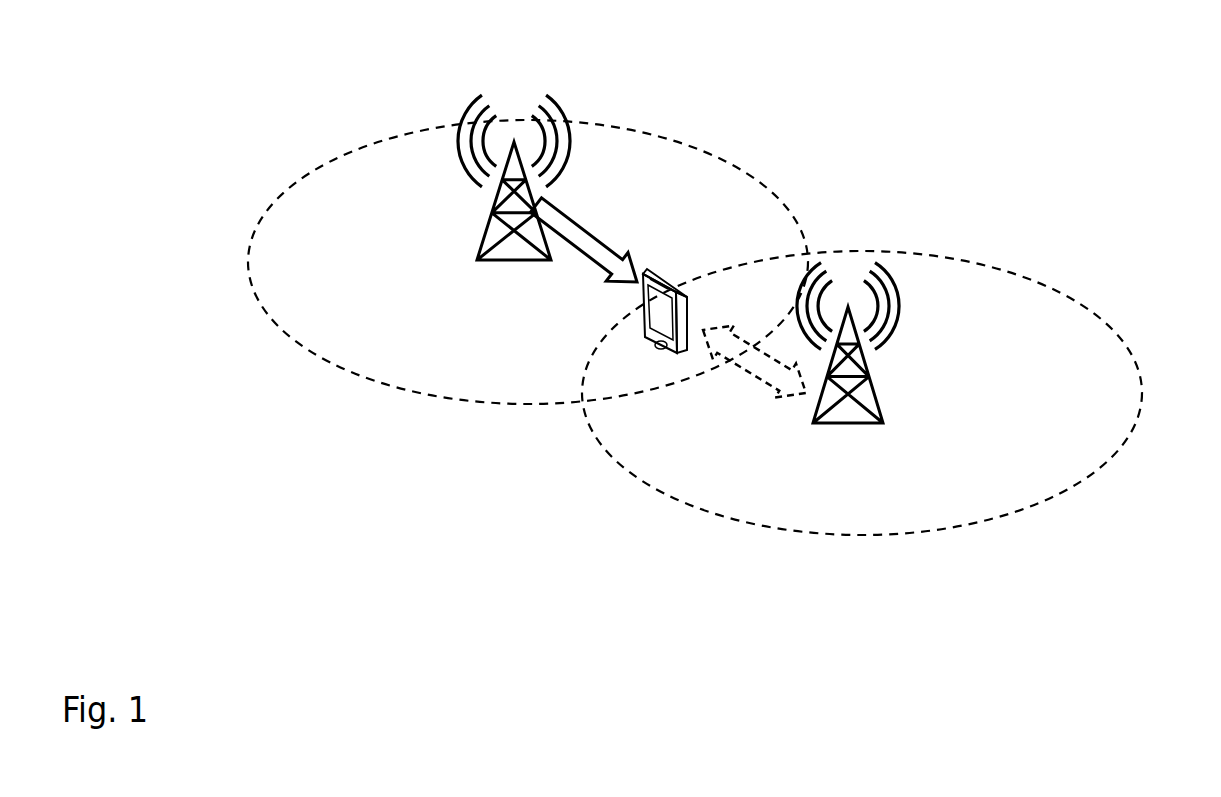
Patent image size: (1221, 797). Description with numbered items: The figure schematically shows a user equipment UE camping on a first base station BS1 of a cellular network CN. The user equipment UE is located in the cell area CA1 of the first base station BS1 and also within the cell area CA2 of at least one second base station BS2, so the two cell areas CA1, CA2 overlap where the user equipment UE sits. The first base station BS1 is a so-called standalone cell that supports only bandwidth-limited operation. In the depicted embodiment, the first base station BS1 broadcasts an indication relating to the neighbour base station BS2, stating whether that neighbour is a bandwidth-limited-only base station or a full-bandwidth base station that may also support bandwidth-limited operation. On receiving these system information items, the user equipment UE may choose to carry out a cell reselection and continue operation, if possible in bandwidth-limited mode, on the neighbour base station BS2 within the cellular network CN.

The cellular network CN is at (1016, 101).
The user equipment UE is at (663, 265).
The first base station BS1 is at (483, 177).
The second base station BS2 is at (878, 343).
The cell area of the first base station CA1 is at (340, 257).
The cell area of the second base station CA2 is at (1013, 445).